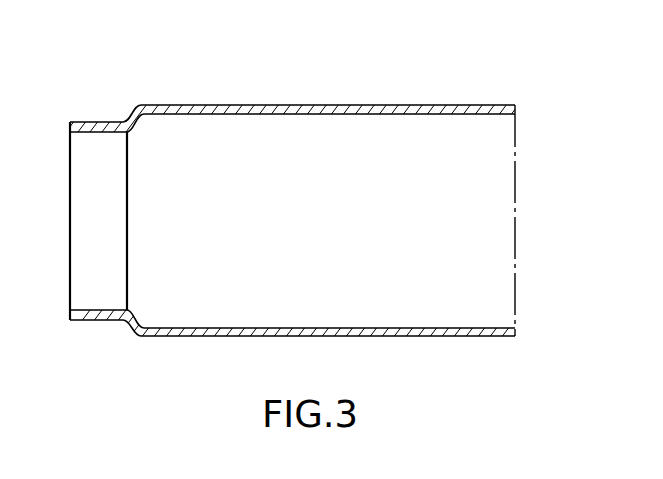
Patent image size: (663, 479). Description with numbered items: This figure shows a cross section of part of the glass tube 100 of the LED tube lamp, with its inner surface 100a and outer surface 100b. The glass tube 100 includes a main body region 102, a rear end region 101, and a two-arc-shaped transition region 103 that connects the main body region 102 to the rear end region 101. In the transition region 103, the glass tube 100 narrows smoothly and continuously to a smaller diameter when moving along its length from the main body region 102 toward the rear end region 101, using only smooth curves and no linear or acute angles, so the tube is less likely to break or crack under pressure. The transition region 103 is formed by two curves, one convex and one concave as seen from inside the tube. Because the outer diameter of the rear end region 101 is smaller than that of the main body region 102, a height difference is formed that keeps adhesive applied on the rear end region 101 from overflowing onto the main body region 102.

The glass tube 100 is at (312, 201).
The inner surface 100a is at (276, 116).
The outer surface 100b is at (299, 104).
The rear end region 101 is at (72, 322).
The main body region 102 is at (328, 222).
The transition region 103 is at (122, 327).